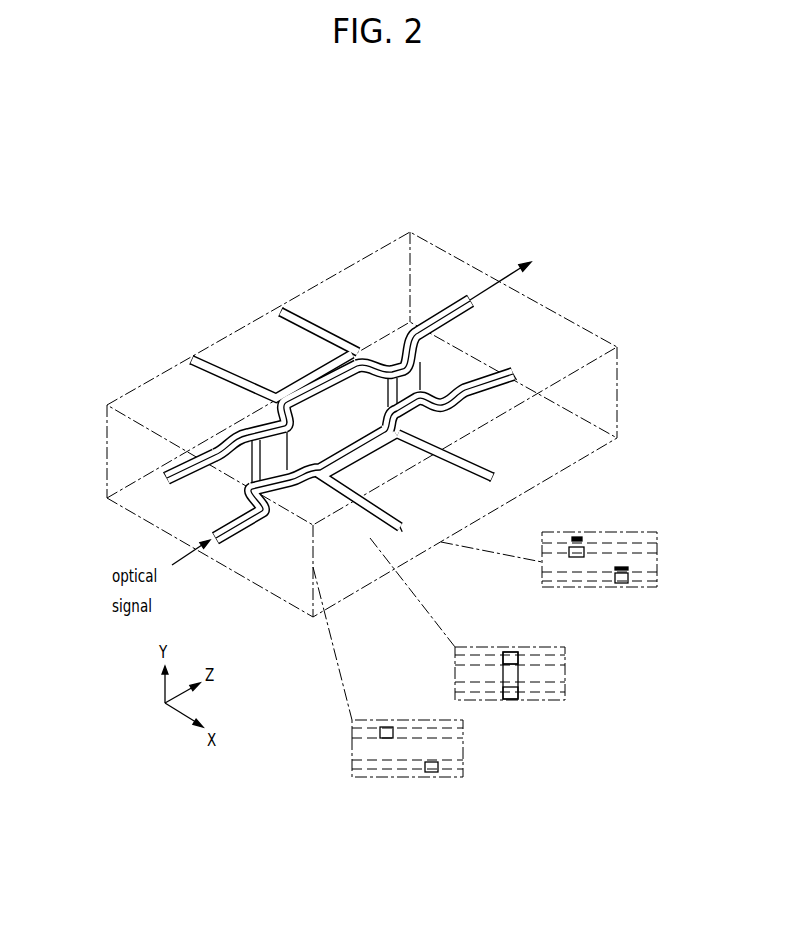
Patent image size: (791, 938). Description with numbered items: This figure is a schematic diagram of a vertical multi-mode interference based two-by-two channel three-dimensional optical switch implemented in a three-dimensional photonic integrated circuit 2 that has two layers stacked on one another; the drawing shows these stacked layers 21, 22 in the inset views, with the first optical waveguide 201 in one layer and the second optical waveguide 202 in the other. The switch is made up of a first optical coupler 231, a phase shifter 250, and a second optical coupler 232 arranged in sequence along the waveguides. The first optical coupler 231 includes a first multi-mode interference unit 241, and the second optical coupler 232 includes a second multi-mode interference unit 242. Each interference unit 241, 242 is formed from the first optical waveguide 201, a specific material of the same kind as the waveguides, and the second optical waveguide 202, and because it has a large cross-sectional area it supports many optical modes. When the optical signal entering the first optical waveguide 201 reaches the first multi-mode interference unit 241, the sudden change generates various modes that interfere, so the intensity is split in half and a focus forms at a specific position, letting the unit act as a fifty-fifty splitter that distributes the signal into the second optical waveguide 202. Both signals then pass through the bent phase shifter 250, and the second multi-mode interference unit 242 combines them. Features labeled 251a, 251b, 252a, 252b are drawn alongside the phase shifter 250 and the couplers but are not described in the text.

The 3D PIC 2 is at (462, 252).
The first layer 21 is at (355, 772).
The second layer 22 is at (355, 734).
The first optical waveguide 201 is at (232, 544).
The second optical waveguide 202 is at (167, 461).
The first optical coupler 231 is at (250, 423).
The second optical coupler 232 is at (386, 348).
The first multi-mode interference unit 241 is at (263, 468).
The second multi-mode interference unit 242 is at (420, 377).
The phase shifter 250 is at (314, 376).
The first coupling arm (upper) 251a is at (276, 396).
The first coupling arm (lower) 251b is at (352, 463).
The second coupling arm (upper) 252a is at (279, 313).
The second coupling arm (lower) 252b is at (480, 473).